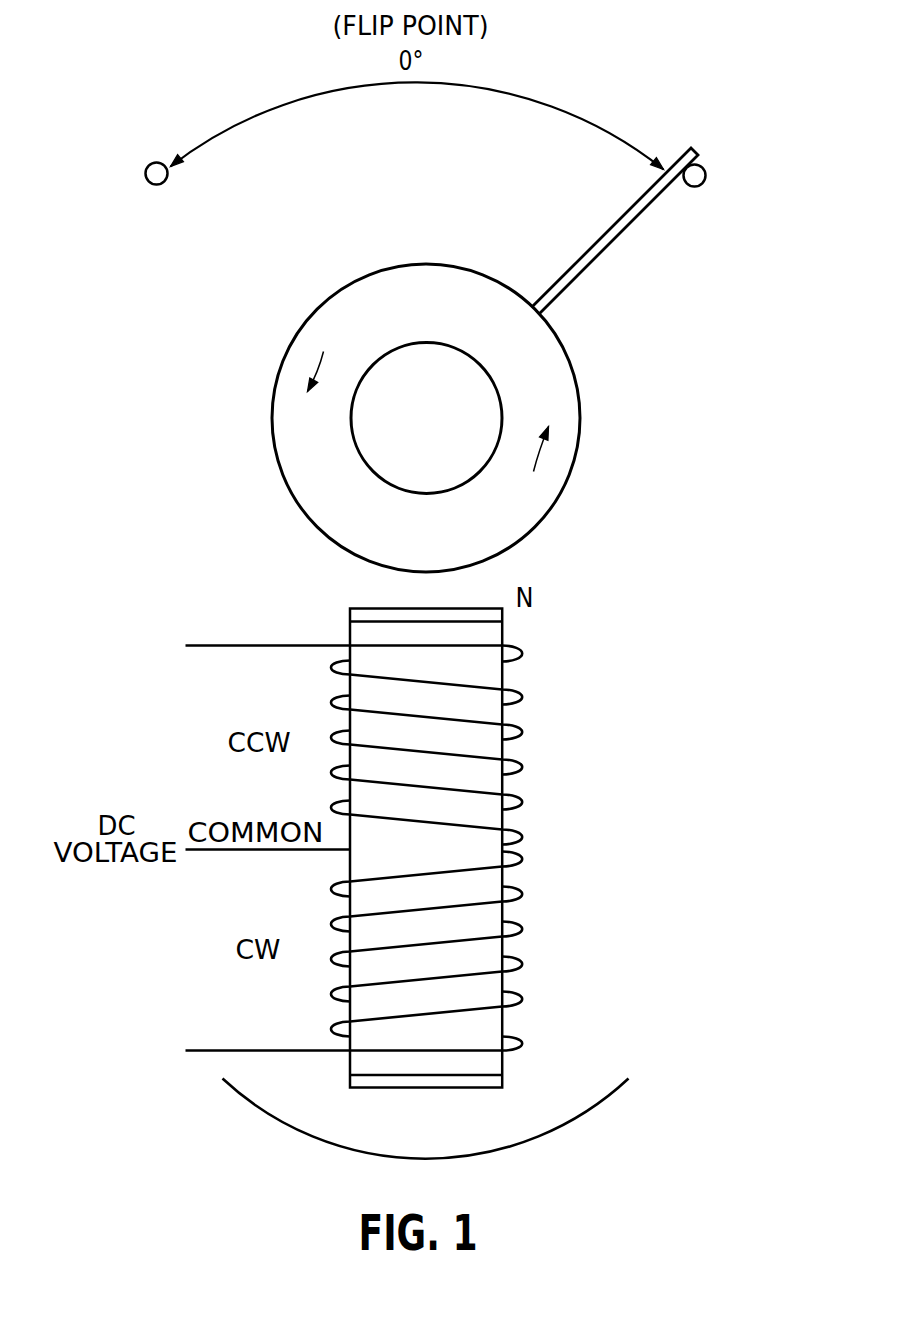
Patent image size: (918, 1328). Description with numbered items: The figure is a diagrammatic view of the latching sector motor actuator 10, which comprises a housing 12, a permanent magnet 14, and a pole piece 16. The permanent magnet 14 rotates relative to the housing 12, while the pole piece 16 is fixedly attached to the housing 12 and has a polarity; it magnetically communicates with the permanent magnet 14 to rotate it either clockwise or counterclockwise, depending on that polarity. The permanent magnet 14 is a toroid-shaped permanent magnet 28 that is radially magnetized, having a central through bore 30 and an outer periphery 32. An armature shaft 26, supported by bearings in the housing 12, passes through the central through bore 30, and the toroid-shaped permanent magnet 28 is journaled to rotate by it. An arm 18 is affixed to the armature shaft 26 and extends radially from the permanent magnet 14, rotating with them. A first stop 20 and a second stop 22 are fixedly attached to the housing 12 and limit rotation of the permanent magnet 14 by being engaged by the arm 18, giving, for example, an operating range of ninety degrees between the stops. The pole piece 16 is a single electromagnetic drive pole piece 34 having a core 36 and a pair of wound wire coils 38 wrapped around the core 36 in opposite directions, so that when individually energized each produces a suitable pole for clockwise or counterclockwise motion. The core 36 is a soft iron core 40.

The latching sector motor actuator 10 is at (662, 358).
The housing 12 is at (277, 1120).
The permanent magnet 14 is at (473, 390).
The pole piece 16 is at (429, 828).
The arm 18 is at (583, 250).
The first stop 20 is at (710, 168).
The second stop 22 is at (143, 168).
The armature shaft 26 is at (364, 356).
The toroid-shaped permanent magnet 28 is at (473, 390).
The central through bore 30 is at (352, 421).
The outer periphery 32 is at (364, 275).
The single electromagnetic drive pole piece 34 is at (429, 828).
The core 36 is at (483, 1063).
The pair of wound wire coils 38 is at (527, 730).
The soft iron core 40 is at (472, 1062).